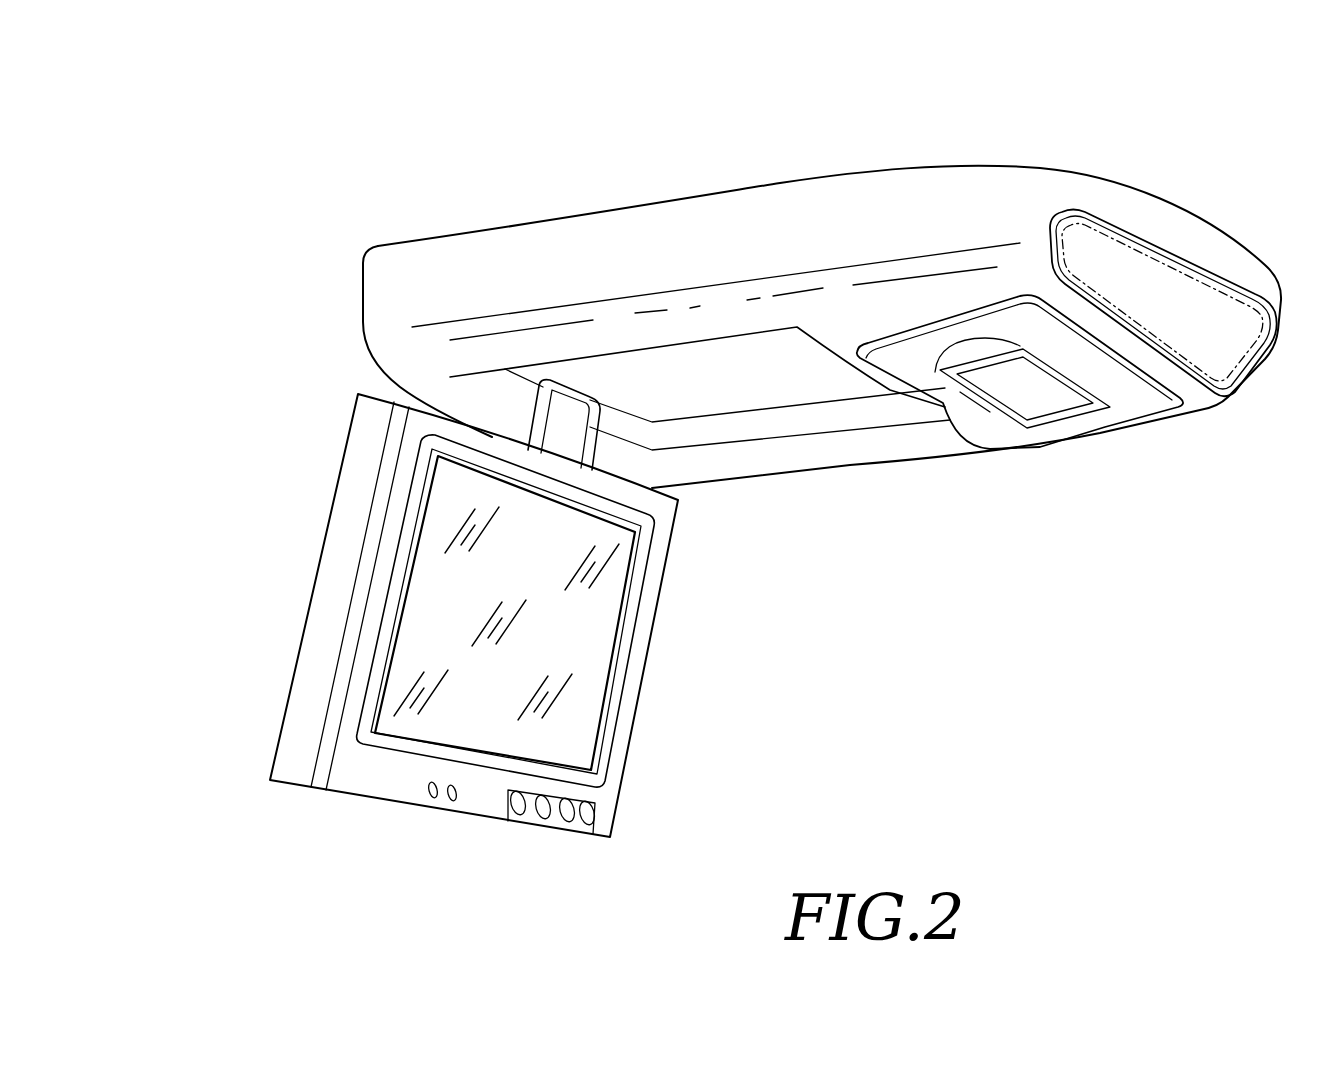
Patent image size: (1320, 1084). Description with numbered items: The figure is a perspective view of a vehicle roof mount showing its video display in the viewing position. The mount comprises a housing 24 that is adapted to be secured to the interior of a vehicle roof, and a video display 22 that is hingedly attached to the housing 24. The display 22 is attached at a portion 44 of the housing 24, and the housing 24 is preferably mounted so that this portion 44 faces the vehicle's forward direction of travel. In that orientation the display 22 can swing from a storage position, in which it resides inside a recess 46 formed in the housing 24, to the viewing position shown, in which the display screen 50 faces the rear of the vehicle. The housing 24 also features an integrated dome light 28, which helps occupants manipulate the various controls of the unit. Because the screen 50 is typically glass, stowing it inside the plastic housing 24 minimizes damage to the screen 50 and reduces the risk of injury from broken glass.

The video display 22 is at (330, 627).
The housing 24 is at (743, 210).
The integrated dome light 28 is at (1030, 395).
The portion of the housing 44 is at (413, 366).
The recess 46 is at (735, 388).
The display screen 50 is at (570, 660).